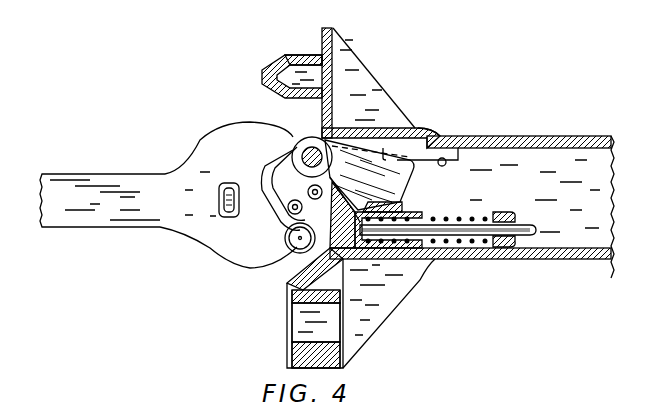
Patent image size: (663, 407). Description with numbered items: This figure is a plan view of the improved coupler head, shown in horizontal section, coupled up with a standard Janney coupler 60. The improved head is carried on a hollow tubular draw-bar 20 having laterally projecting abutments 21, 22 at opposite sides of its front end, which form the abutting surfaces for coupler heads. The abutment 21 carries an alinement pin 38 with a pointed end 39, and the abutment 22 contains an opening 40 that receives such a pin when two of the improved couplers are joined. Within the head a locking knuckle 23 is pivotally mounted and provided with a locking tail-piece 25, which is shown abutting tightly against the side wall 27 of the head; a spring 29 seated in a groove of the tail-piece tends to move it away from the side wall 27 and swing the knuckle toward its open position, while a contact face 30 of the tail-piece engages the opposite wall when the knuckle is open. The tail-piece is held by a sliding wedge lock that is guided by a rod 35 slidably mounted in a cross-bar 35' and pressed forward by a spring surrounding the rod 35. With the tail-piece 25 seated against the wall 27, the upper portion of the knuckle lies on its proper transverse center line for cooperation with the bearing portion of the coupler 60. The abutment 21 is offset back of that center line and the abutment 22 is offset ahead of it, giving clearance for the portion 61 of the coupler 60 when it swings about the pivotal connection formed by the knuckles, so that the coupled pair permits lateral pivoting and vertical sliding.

The draw-bar 20 is at (573, 137).
The abutment 21 is at (333, 112).
The abutment 22 is at (343, 358).
The locking knuckle 23 is at (297, 188).
The locking tail-piece 25 is at (430, 138).
The side wall 27 is at (397, 120).
The spring 29 is at (458, 163).
The contact face 30 is at (402, 203).
The rod 35 is at (448, 261).
The cross-bar 35' is at (537, 217).
The alinement pin 38 is at (303, 54).
The pointed end 39 is at (267, 63).
The opening 40 is at (300, 322).
The Janney coupler 60 is at (215, 163).
The portion of the coupler 61 is at (293, 138).